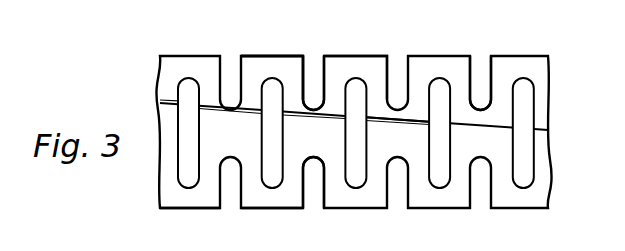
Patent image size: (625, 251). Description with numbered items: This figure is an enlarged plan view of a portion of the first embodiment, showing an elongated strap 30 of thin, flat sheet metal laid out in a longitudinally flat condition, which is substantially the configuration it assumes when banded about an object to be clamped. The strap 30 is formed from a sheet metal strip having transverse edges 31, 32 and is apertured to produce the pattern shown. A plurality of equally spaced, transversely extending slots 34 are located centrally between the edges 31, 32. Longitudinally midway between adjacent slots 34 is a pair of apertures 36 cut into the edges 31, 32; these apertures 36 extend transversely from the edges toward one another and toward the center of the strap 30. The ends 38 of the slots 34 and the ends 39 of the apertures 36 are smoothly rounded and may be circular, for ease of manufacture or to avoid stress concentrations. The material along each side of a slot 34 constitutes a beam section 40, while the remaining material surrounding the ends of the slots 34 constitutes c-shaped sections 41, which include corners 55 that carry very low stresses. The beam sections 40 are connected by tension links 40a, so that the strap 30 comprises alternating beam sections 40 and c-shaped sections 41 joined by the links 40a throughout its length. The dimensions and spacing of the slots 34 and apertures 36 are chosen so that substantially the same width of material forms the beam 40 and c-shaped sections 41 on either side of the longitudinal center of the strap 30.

The elongated strap 30 is at (163, 72).
The transverse edge 31 is at (272, 56).
The transverse edge 32 is at (293, 209).
The slot 34 is at (348, 90).
The aperture 36 is at (303, 63).
The slot end 38 is at (444, 78).
The aperture end 39 is at (478, 103).
The beam section 40 is at (380, 117).
The tension link 40a is at (398, 135).
The c-shaped section 41 is at (373, 72).
The corner 55 is at (246, 63).